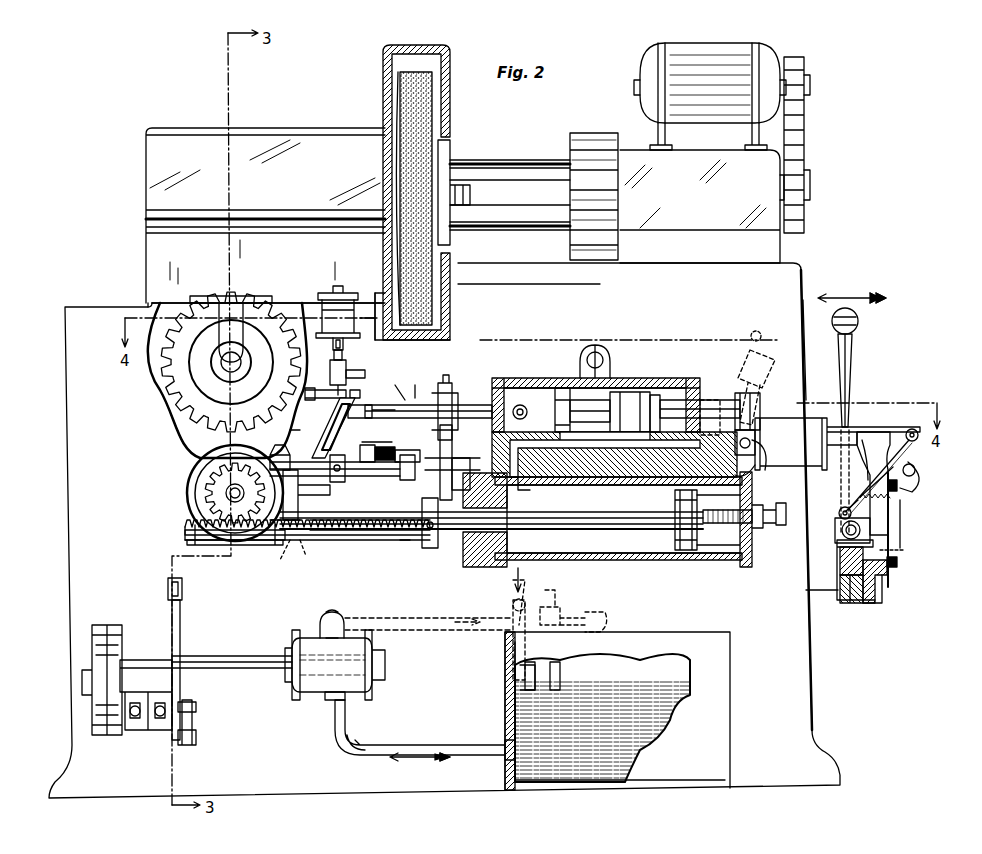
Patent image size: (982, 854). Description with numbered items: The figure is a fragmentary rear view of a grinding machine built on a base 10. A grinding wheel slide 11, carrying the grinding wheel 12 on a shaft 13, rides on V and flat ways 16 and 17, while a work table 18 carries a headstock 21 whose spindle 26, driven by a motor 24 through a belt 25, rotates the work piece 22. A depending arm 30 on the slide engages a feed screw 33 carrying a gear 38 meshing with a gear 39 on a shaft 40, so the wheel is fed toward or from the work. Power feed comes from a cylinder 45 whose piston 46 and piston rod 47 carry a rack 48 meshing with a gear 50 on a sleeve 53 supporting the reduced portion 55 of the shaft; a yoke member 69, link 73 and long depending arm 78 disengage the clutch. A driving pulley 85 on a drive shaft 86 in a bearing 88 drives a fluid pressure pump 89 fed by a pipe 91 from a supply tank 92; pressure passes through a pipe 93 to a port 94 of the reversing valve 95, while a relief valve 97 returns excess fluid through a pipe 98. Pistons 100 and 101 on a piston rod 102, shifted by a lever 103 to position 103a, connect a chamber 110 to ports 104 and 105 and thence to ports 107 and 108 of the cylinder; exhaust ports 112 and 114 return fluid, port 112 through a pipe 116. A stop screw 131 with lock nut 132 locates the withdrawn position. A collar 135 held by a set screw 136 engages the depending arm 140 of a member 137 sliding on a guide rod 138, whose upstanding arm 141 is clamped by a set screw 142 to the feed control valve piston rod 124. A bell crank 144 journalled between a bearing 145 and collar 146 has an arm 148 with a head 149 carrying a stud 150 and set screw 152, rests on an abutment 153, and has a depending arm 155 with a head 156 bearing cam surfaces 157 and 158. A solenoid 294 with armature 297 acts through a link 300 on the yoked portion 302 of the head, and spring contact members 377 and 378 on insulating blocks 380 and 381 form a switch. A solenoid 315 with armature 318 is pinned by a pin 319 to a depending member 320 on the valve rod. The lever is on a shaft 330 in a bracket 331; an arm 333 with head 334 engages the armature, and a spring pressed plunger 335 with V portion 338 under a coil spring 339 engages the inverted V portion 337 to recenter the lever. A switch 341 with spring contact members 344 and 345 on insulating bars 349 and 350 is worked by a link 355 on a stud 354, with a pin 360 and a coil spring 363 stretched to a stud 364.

The base 10 is at (800, 728).
The grinding wheel slide 11 is at (303, 135).
The grinding wheel 12 is at (405, 110).
The shaft 13 is at (470, 195).
The V way 16 is at (370, 305).
The flat way 17 is at (150, 299).
The work table 18 is at (800, 265).
The headstock 21 is at (628, 165).
The work piece 22 is at (520, 185).
The motor 24 is at (760, 62).
The belt 25 is at (797, 115).
The spindle 26 is at (808, 193).
The depending arm 30 is at (232, 310).
The feed screw 33 is at (222, 364).
The gear 38 is at (198, 378).
The gear 39 is at (170, 425).
The shaft 40 is at (208, 482).
The cylinder 45 is at (650, 560).
The piston 46 is at (688, 530).
The piston rod 47 is at (628, 532).
The rack 48 is at (368, 540).
The gear 50 is at (214, 492).
The sleeve 53 is at (225, 500).
The reduced portion 55 is at (226, 495).
The yoke member 69 is at (182, 583).
The link 73 is at (180, 612).
The long depending arm 78 is at (192, 722).
The driving pulley 85 is at (105, 660).
The drive shaft 86 is at (243, 670).
The bearing 88 is at (150, 662).
The fluid pressure pump 89 is at (318, 690).
The pipe 91 is at (428, 745).
The supply tank 92 is at (720, 728).
The pipe 93 is at (600, 613).
The port 94 is at (600, 395).
The reversing valve 95 is at (672, 395).
The relief valve 97 is at (548, 608).
The pipe 98 is at (562, 680).
The piston 100 is at (560, 388).
The piston 101 is at (660, 395).
The piston rod 102 is at (586, 352).
The lever 103 is at (852, 345).
The lever position 103a is at (782, 335).
The port 104 is at (530, 400).
The port 105 is at (648, 375).
The port 107 is at (728, 488).
The port 108 is at (528, 490).
The chamber 110 is at (632, 395).
The exhaust port 112 is at (500, 383).
The exhaust port 114 is at (708, 392).
The pipe 116 is at (520, 683).
The piston rod 124 is at (462, 405).
The stop screw 131 is at (780, 505).
The lock nut 132 is at (752, 530).
The collar 135 is at (436, 540).
The set screw 136 is at (425, 530).
The member 137 is at (462, 460).
The guide rod 138 is at (410, 480).
The depending arm 140 is at (470, 567).
The upstanding arm 141 is at (445, 441).
The set screw 142 is at (446, 378).
The bell crank 144 is at (300, 462).
The bearing 145 is at (292, 440).
The collar 146 is at (380, 505).
The arm 148 is at (335, 430).
The head 149 is at (330, 378).
The stud 150 is at (365, 375).
The set screw 152 is at (355, 405).
The abutment 153 is at (340, 478).
The depending arm 155 is at (300, 492).
The head 156 is at (310, 521).
The cam surface 157 is at (312, 545).
The cam surface 158 is at (282, 552).
The solenoid 294 is at (325, 315).
The armature 297 is at (335, 290).
The link 300 is at (333, 370).
The yoked portion 302 is at (346, 372).
The solenoid 315 is at (800, 420).
The armature 318 is at (790, 405).
The pin 319 is at (790, 475).
The depending member 320 is at (745, 395).
The shaft 330 is at (846, 541).
The bracket 331 is at (832, 585).
The arm 333 is at (855, 492).
The head 334 is at (874, 445).
The spring pressed plunger 335 is at (845, 565).
The inverted V portion 337 is at (868, 560).
The V portion 338 is at (843, 552).
The coil spring 339 is at (872, 600).
The switch 341 is at (900, 535).
The spring contact member 344 is at (902, 513).
The spring contact member 345 is at (900, 566).
The insulating bar 349 is at (900, 495).
The insulating bar 350 is at (905, 550).
The stud 354 is at (914, 480).
The link 355 is at (916, 475).
The pin 360 is at (911, 429).
The coil spring 363 is at (895, 460).
The stud 364 is at (845, 525).
The spring contact member 377 is at (380, 418).
The spring contact member 378 is at (380, 447).
The insulating block 380 is at (412, 385).
The insulating block 381 is at (405, 470).